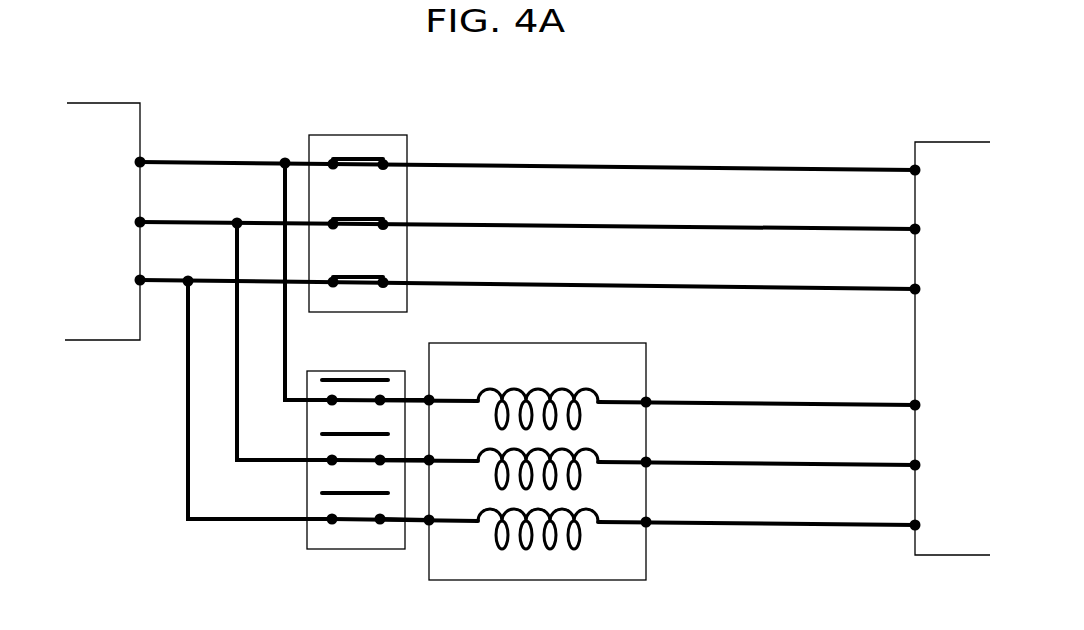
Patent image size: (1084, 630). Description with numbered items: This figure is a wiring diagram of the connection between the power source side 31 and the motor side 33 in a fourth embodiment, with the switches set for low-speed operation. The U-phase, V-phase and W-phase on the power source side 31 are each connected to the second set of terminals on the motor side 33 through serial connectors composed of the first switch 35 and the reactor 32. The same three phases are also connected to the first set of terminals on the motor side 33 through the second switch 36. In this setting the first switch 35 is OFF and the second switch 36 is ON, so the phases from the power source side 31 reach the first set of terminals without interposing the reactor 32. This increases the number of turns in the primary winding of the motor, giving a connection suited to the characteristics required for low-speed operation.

The power source side 31 is at (92, 342).
The reactor 32 is at (646, 352).
The motor side 33 is at (912, 146).
The first switch 35 is at (305, 538).
The second switch 36 is at (410, 141).